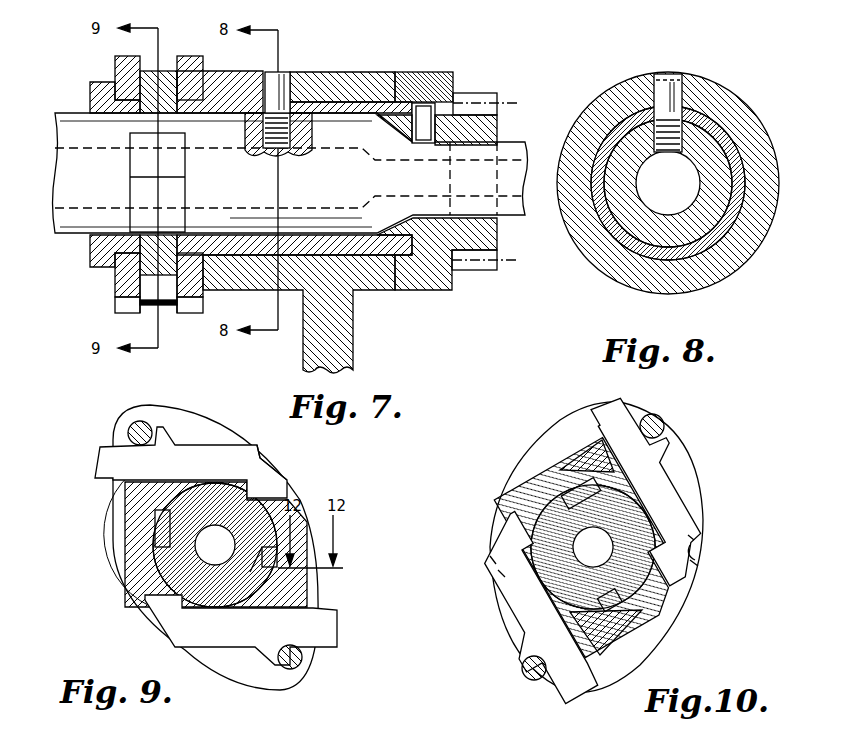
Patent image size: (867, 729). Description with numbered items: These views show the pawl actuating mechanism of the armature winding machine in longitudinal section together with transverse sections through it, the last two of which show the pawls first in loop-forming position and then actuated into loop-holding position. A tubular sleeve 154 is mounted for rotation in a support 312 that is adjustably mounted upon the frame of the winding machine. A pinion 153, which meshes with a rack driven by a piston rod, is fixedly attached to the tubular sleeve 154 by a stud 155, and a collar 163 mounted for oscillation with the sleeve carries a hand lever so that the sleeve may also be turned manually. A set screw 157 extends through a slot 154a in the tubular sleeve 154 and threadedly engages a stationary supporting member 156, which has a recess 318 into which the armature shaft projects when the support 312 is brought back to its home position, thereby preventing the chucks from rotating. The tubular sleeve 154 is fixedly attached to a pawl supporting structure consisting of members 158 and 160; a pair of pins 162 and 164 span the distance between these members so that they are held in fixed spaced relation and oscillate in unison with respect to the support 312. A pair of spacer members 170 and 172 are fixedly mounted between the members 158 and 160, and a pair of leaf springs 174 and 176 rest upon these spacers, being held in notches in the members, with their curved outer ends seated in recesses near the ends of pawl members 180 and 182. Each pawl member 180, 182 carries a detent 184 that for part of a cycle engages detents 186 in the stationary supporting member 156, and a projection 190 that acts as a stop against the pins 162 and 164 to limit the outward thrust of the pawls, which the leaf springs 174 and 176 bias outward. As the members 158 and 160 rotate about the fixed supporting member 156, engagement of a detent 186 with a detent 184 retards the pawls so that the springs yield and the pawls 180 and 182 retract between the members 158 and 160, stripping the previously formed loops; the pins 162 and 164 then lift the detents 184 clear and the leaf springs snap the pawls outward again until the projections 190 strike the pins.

In FIG. 7, the recess 318 is at (70, 177).
In FIG. 8, the recess 318 is at (655, 172).
In FIG. 7, the pawl supporting structure member 160 is at (125, 62).
In FIG. 9, the pawl supporting structure member 160 is at (195, 432).
In FIG. 10, the pawl supporting structure member 160 is at (682, 460).
In FIG. 7, the pawl supporting structure member 158 is at (190, 62).
In FIG. 7, the spacer member 170 is at (166, 70).
In FIG. 10, the spacer member 170 is at (560, 465).
In FIG. 7, the spacer member 172 is at (148, 280).
In FIG. 10, the spacer member 172 is at (605, 652).
In FIG. 7, the set screw 157 is at (285, 72).
In FIG. 7, the collar 163 is at (420, 74).
In FIG. 7, the stud 155 is at (440, 103).
In FIG. 7, the supporting member 156 is at (88, 236).
In FIG. 9, the supporting member 156 is at (165, 560).
In FIG. 10, the supporting member 156 is at (688, 510).
In FIG. 7, the tubular sleeve 154 is at (412, 285).
In FIG. 8, the tubular sleeve 154 is at (610, 243).
In FIG. 8, the slot 154a is at (633, 123).
In FIG. 7, the pinion 153 is at (477, 270).
In FIG. 7, the support 312 is at (355, 349).
In FIG. 9, the pin 162 is at (132, 423).
In FIG. 10, the pin 162 is at (665, 428).
In FIG. 9, the pin 164 is at (303, 661).
In FIG. 10, the pin 164 is at (520, 680).
In FIG. 9, the leaf spring 174 is at (125, 550).
In FIG. 10, the leaf spring 174 is at (512, 505).
In FIG. 9, the leaf spring 176 is at (302, 507).
In FIG. 10, the leaf spring 176 is at (660, 626).
In FIG. 9, the pawl member 180 is at (205, 630).
In FIG. 10, the pawl member 180 is at (525, 602).
In FIG. 9, the pawl member 182 is at (226, 456).
In FIG. 10, the pawl member 182 is at (694, 548).
In FIG. 10, the detent 184 is at (692, 562).
In FIG. 10, the detent 186 is at (690, 535).
In FIG. 10, the projection 190 is at (690, 470).